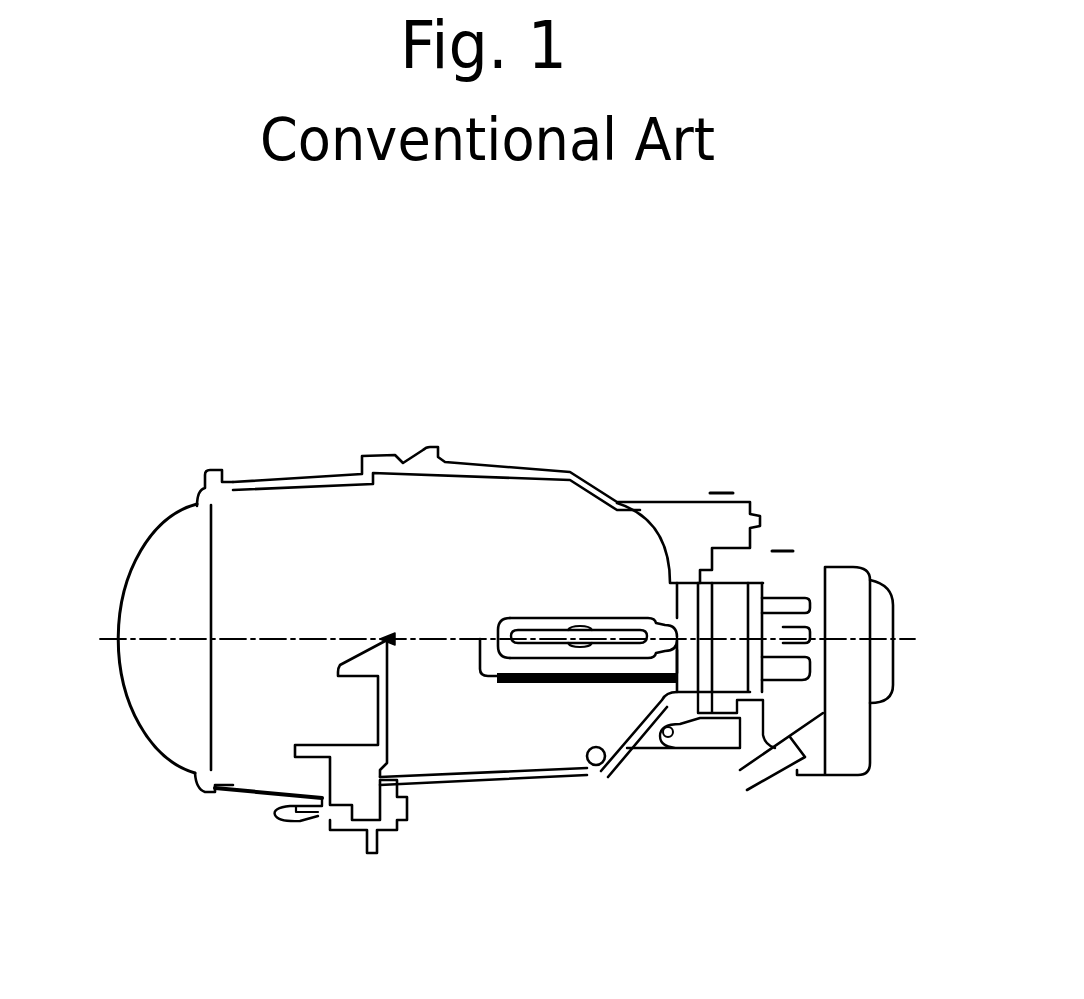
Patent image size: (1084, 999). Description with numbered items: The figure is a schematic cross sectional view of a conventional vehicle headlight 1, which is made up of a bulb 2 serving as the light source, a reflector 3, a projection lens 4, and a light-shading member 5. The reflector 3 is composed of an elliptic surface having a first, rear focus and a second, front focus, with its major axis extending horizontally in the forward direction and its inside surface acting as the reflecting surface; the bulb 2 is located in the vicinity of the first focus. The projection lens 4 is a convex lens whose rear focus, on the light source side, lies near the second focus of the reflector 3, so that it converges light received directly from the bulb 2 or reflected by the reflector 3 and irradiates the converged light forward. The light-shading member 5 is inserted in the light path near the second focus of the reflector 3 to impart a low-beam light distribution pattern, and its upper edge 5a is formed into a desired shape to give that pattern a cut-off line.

The vehicle headlight 1 is at (881, 314).
The bulb 2 is at (585, 622).
The reflector 3 is at (592, 748).
The projection lens 4 is at (131, 574).
The light-shading member 5 is at (387, 708).
The upper edge 5a is at (388, 637).